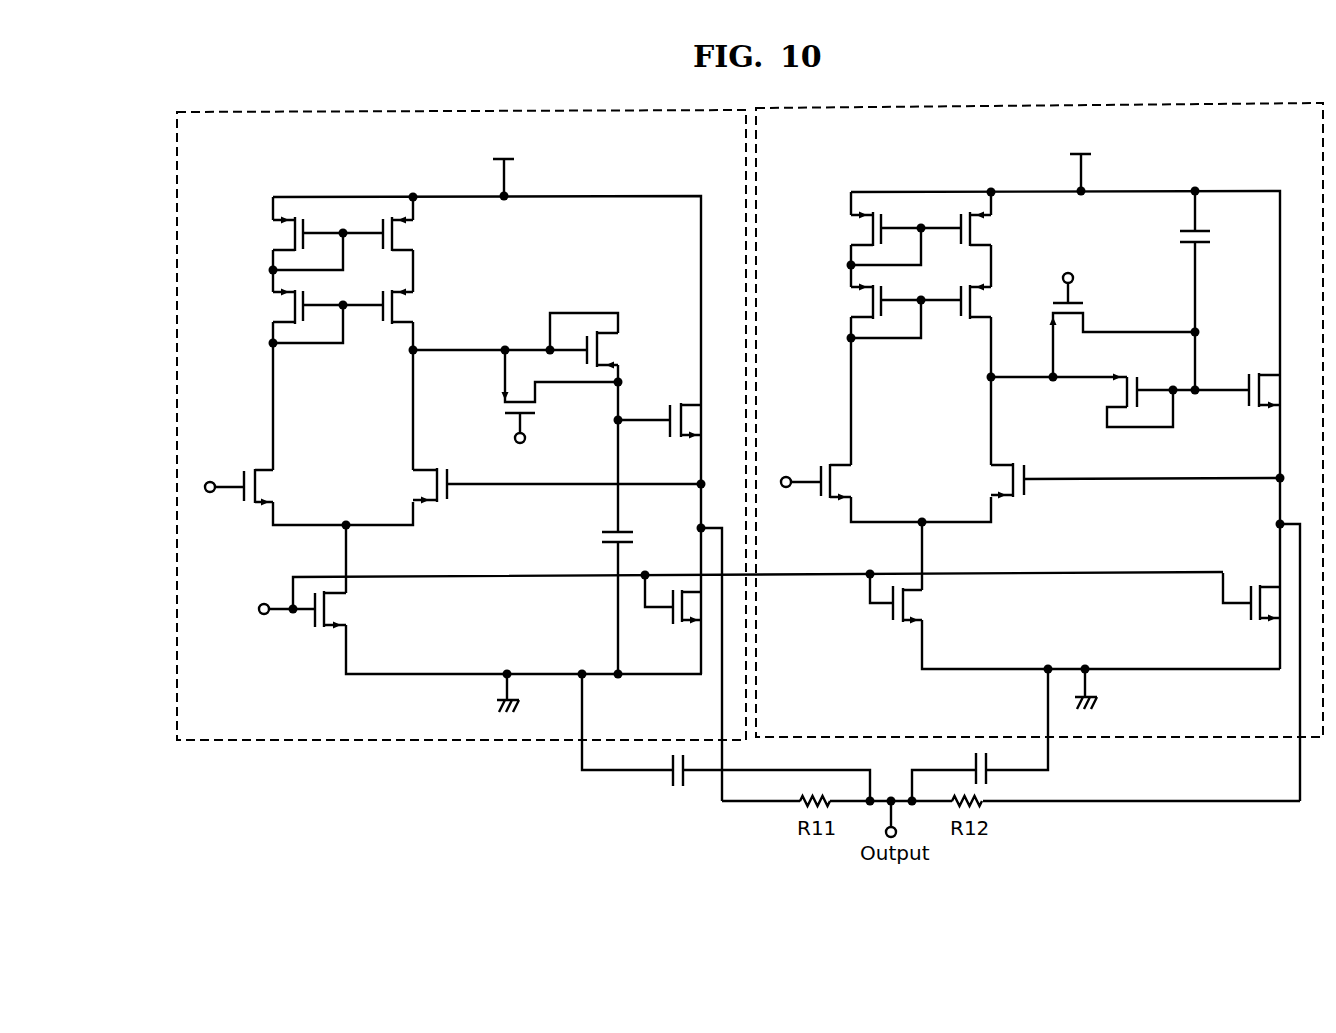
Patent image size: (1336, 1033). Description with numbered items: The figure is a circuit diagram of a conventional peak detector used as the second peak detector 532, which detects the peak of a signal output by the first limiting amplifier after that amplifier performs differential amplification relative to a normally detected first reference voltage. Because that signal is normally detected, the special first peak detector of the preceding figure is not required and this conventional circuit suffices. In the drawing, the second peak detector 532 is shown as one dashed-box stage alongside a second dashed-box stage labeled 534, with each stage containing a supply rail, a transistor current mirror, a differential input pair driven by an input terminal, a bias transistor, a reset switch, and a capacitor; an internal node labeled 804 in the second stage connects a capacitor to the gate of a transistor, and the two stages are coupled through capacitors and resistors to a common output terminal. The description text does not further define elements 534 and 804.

The second peak detector 532 is at (660, 110).
The second amplifier stage 534 is at (1238, 106).
The feedback node with parasitic capacitor Cp 804 is at (1197, 350).